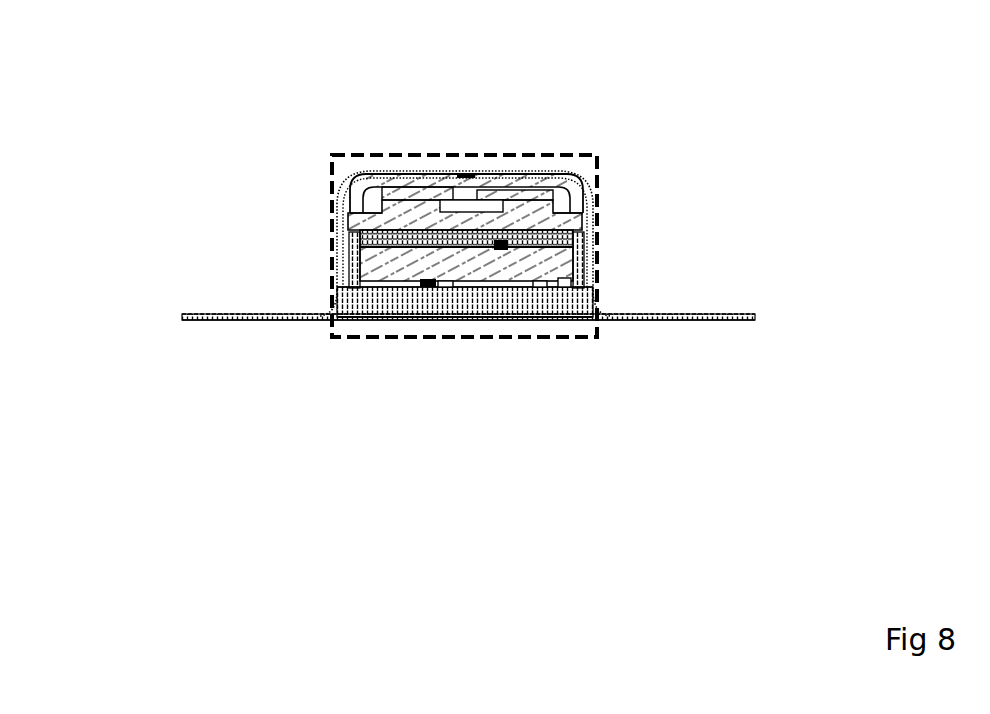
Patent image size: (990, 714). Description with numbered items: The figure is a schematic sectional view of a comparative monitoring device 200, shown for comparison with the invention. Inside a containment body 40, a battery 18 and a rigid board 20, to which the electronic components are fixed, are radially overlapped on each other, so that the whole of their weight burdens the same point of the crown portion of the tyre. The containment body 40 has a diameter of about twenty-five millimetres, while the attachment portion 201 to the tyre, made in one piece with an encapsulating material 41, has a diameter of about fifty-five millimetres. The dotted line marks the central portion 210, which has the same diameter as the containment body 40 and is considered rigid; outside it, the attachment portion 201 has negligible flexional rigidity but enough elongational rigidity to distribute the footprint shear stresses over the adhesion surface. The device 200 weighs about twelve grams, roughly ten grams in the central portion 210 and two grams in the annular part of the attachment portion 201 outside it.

The monitoring device 200 is at (300, 122).
The attachment portion 201 is at (673, 318).
The central portion 210 is at (600, 173).
The containment body 40 is at (402, 180).
The encapsulating material 41 is at (573, 300).
The rigid board 20 is at (525, 217).
The battery 18 is at (448, 272).